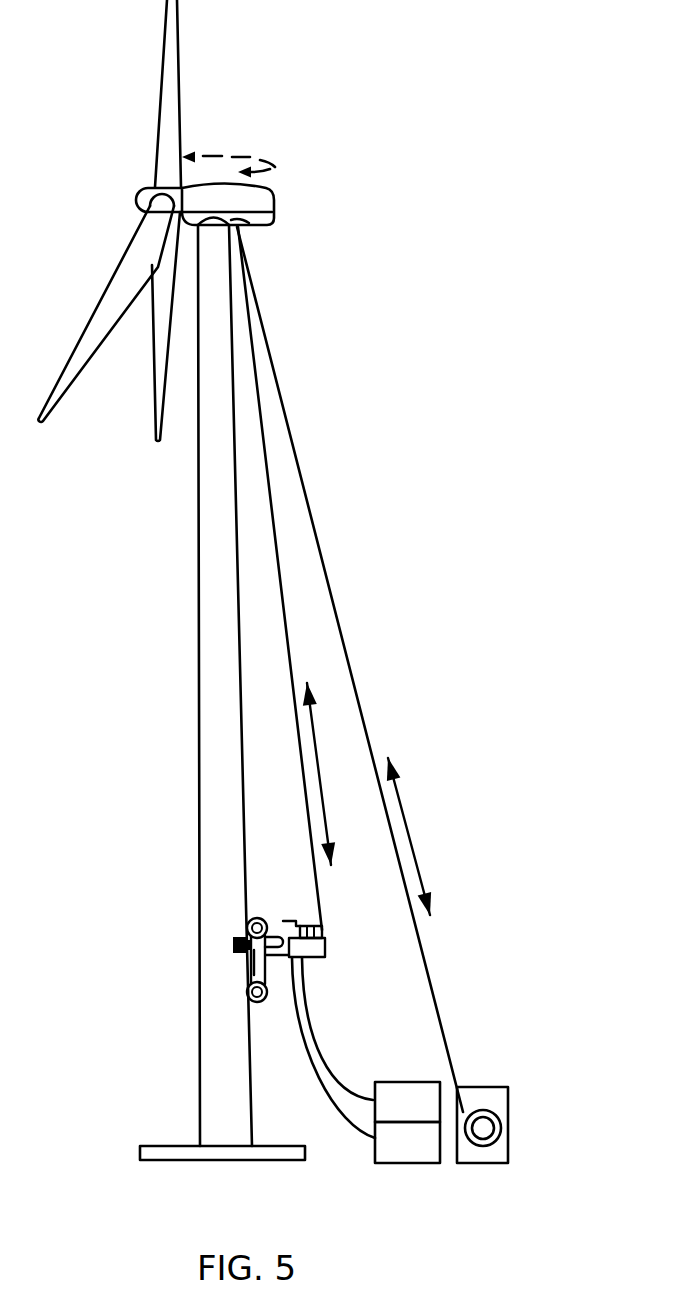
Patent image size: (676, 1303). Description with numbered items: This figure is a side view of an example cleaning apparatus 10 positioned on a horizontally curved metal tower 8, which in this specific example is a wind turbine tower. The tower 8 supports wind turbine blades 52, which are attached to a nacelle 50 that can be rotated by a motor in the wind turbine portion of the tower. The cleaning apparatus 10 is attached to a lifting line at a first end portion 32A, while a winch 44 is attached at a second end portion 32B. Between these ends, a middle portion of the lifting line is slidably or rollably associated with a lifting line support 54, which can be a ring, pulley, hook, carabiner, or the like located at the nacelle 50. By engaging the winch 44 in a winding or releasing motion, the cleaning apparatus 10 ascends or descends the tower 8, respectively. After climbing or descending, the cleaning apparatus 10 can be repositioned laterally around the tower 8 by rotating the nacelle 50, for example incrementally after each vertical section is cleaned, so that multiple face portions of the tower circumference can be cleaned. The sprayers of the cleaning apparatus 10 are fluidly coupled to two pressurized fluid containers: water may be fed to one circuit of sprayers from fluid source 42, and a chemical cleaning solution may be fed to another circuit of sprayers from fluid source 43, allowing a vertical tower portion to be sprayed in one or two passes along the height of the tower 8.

The horizontally curved metal tower 8 is at (218, 1071).
The cleaning apparatus 10 is at (268, 913).
The first end portion 32A is at (275, 526).
The second end portion 32B is at (334, 596).
The fluid source 42 is at (395, 1115).
The fluid source 43 is at (395, 1156).
The winch 44 is at (505, 1105).
The nacelle 50 is at (245, 203).
The wind turbine blades 52 is at (146, 262).
The lifting line support 54 is at (248, 222).